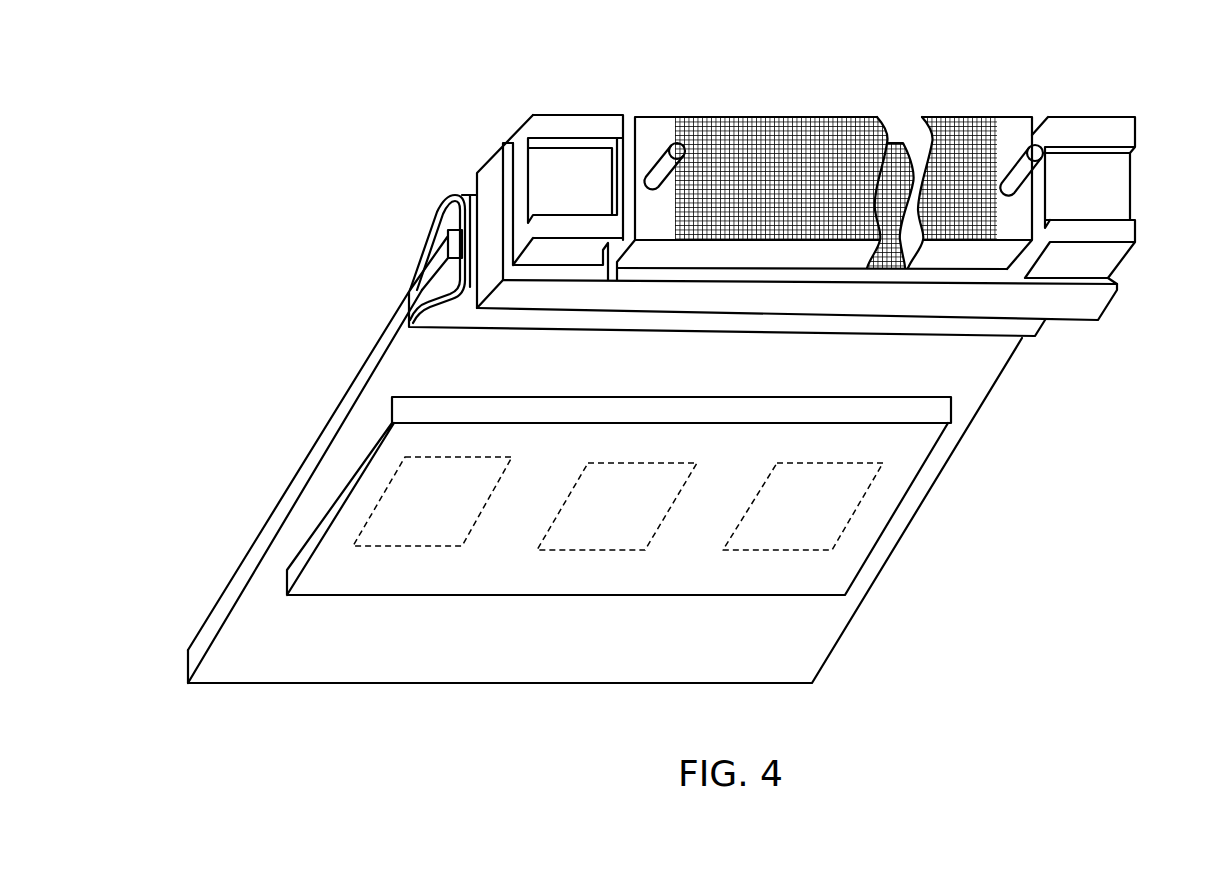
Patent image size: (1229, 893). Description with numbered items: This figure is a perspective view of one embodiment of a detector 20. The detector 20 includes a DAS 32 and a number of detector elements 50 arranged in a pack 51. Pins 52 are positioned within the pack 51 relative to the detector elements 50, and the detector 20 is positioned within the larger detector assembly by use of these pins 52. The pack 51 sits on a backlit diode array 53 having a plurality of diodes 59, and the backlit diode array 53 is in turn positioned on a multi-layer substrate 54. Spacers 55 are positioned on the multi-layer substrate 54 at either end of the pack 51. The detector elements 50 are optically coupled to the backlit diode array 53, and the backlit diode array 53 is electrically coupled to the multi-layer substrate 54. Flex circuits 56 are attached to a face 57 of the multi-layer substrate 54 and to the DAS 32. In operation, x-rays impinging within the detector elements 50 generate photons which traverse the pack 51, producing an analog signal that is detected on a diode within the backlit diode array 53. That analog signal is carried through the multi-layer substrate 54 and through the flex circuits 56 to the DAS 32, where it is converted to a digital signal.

The detector 20 is at (1082, 72).
The DAS 32 is at (928, 475).
The detector elements 50 is at (745, 115).
The pack 51 is at (680, 85).
The pins 52 is at (651, 137).
The backlit diode array 53 is at (998, 272).
The multi-layer substrate 54 is at (1098, 303).
The spacers 55 is at (572, 125).
The flex circuits 56 is at (423, 220).
The face 57 is at (475, 182).
The diodes 59 is at (897, 142).